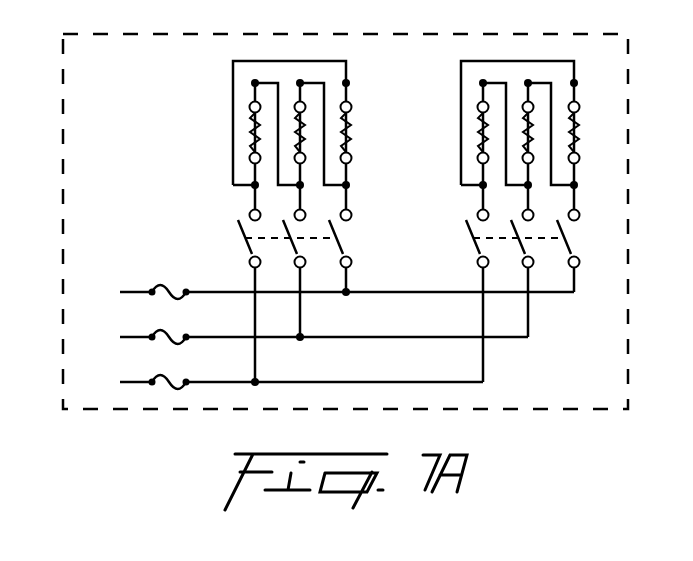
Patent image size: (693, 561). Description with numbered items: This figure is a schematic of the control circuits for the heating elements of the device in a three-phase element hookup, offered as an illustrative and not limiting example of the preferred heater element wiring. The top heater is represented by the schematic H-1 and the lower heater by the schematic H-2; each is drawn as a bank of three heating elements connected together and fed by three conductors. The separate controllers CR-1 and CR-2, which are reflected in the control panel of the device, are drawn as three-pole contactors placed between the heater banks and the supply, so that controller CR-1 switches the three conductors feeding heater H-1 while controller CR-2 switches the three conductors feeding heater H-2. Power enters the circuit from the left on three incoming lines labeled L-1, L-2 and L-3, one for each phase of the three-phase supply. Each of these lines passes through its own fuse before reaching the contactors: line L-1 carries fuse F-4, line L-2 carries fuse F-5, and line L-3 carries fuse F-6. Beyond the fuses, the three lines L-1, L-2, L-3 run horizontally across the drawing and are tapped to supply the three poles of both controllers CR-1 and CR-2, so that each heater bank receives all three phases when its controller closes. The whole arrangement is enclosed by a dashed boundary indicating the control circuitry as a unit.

The top heater schematic H-1 is at (270, 125).
The lower heater schematic H-2 is at (498, 125).
The controller CR-1 is at (317, 283).
The controller CR-2 is at (544, 283).
The power line 1 L-1 is at (277, 385).
The power line 2 L-2 is at (300, 340).
The power line 3 L-3 is at (323, 295).
The fuse on line L-1 F-4 is at (176, 371).
The fuse on line L-2 F-5 is at (176, 325).
The fuse on line L-3 F-6 is at (176, 278).